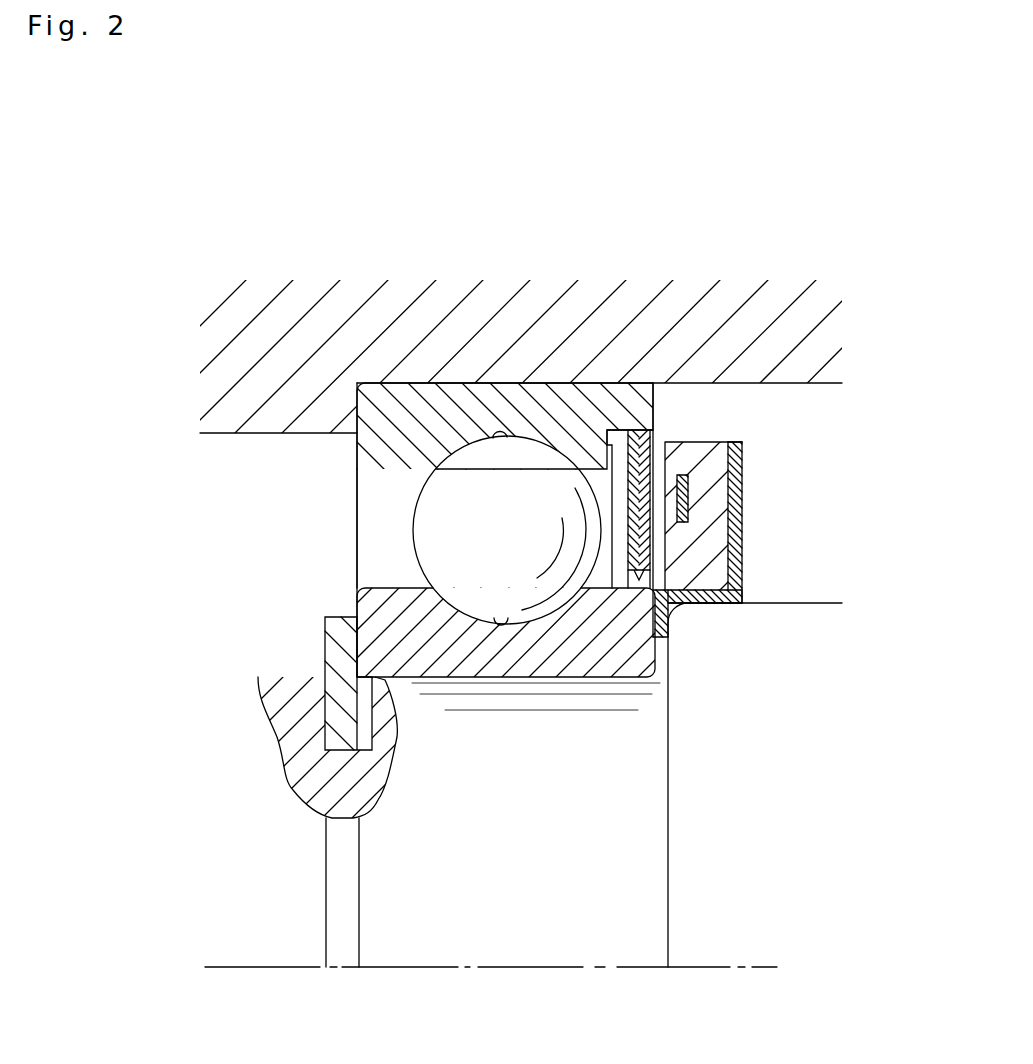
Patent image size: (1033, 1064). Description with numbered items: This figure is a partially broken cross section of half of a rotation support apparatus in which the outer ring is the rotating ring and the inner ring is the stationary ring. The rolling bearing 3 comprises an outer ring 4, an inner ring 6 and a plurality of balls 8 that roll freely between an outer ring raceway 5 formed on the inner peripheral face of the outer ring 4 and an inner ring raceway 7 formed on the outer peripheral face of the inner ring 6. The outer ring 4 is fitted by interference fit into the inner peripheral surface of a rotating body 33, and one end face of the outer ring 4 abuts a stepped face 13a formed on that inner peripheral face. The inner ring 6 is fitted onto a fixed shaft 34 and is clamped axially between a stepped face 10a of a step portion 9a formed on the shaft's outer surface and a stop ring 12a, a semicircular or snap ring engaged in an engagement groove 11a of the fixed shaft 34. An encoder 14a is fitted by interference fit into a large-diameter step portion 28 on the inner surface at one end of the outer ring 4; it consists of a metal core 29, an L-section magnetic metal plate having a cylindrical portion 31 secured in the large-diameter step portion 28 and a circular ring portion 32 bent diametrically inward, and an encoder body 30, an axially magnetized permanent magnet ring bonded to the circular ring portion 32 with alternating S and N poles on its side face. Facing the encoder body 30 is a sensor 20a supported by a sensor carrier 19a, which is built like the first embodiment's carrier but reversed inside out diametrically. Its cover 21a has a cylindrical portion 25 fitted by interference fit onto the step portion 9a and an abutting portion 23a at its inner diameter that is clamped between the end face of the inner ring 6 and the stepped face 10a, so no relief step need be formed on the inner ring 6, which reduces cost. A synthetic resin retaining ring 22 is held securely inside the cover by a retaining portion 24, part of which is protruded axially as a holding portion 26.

The rolling bearing 3 is at (405, 548).
The outer ring 4 is at (395, 387).
The outer ring raceway 5 is at (507, 433).
The inner ring 6 is at (420, 677).
The inner ring raceway 7 is at (500, 622).
The balls 8 is at (440, 518).
The step portion 9a is at (800, 605).
The stepped face 10a is at (668, 909).
The engagement groove 11a is at (345, 748).
The stop ring 12a is at (335, 660).
The stepped face 13a is at (370, 387).
The encoder 14a is at (745, 445).
The sensor carrier 19a is at (700, 600).
The sensor 20a is at (715, 457).
The cover 21a is at (740, 573).
The retaining ring 22 is at (743, 440).
The abutting portion 23a is at (667, 615).
The retaining portion 24 is at (738, 540).
The cylindrical portion 25 is at (725, 600).
The holding portion 26 is at (747, 493).
The large-diameter step portion 28 is at (613, 588).
The metal core 29 is at (693, 450).
The encoder body 30 is at (612, 560).
The cylindrical portion 31 is at (618, 430).
The circular ring portion 32 is at (640, 572).
The rotating body 33 is at (535, 355).
The fixed shaft 34 is at (580, 938).